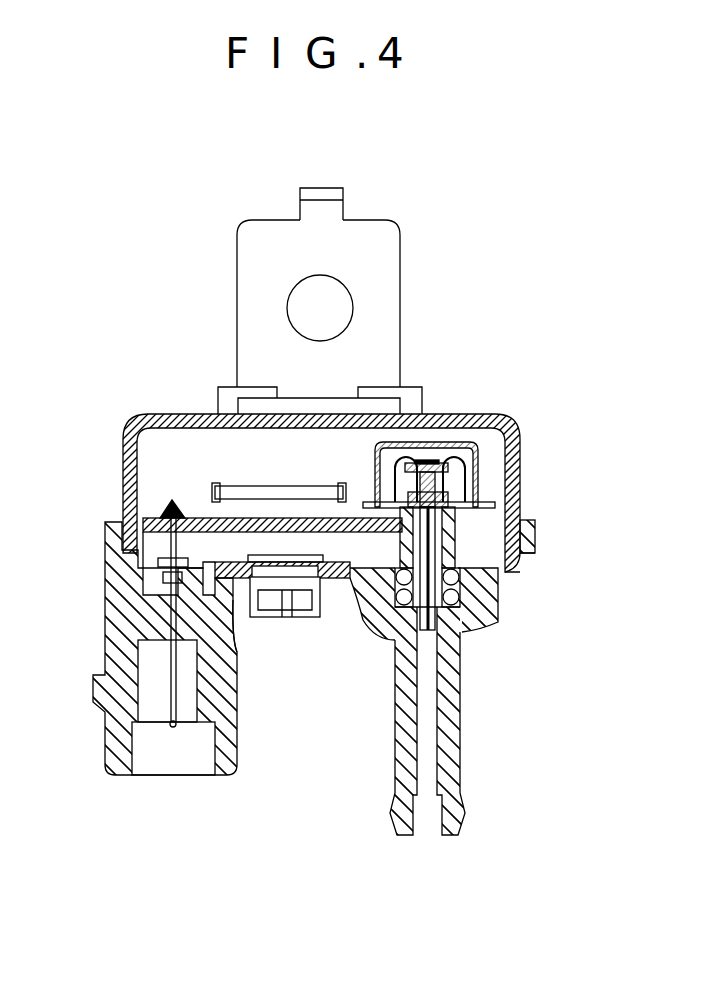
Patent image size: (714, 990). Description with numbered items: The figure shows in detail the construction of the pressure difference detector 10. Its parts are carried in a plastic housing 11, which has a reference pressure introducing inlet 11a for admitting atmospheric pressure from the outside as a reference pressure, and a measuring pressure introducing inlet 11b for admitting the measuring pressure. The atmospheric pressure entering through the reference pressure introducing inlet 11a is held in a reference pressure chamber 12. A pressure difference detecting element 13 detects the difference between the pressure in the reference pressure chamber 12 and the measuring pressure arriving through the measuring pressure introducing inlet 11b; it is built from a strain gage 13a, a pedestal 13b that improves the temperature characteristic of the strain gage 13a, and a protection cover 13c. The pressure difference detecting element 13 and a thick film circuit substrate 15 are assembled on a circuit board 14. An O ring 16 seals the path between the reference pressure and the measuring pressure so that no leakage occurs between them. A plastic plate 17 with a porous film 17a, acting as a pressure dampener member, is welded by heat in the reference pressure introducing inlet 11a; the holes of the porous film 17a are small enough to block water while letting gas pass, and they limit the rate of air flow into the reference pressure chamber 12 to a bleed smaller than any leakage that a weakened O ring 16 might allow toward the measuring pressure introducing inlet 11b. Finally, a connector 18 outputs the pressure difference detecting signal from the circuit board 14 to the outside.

The pressure difference detector 10 is at (148, 413).
The plastic housing 11 is at (485, 620).
The reference pressure introducing inlet 11a is at (290, 617).
The measuring pressure introducing inlet 11b is at (425, 780).
The reference pressure chamber 12 is at (207, 543).
The pressure difference detecting element 13 is at (460, 455).
The strain gage 13a is at (432, 462).
The pedestal 13b is at (440, 498).
The protection cover 13c is at (478, 463).
The circuit board 14 is at (150, 557).
The thick film circuit substrate 15 is at (237, 487).
The O ring 16 is at (498, 598).
The plastic plate 17 is at (232, 630).
The porous film 17a is at (328, 592).
The connector 18 is at (117, 728).